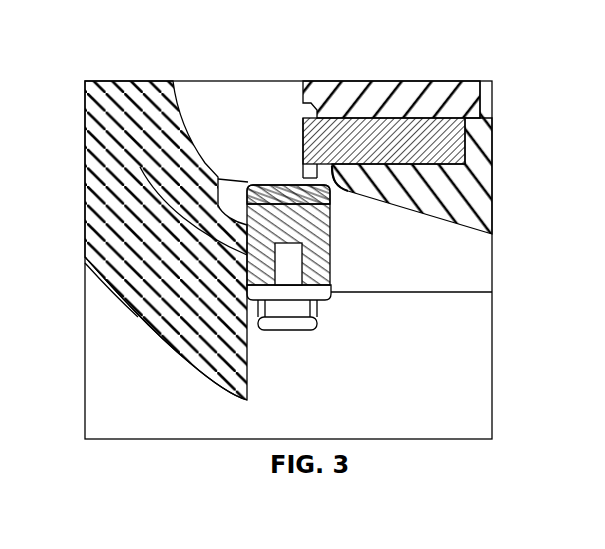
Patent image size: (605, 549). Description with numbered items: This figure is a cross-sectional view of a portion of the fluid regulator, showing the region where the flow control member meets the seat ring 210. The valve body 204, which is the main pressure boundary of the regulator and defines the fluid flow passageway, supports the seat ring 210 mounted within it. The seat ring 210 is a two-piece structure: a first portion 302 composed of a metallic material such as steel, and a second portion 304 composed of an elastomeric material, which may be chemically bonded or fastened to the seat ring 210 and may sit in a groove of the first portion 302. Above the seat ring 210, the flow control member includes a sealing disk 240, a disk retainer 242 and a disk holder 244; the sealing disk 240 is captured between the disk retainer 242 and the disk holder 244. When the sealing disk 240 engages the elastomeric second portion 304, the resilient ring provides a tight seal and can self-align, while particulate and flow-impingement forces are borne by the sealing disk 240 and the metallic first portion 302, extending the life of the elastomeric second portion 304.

The valve body 204 is at (142, 323).
The seat ring 210 is at (202, 232).
The sealing disk 240 is at (443, 143).
The disk retainer 242 is at (465, 201).
The disk holder 244 is at (426, 99).
The first portion 302 is at (331, 256).
The second portion 304 is at (272, 185).